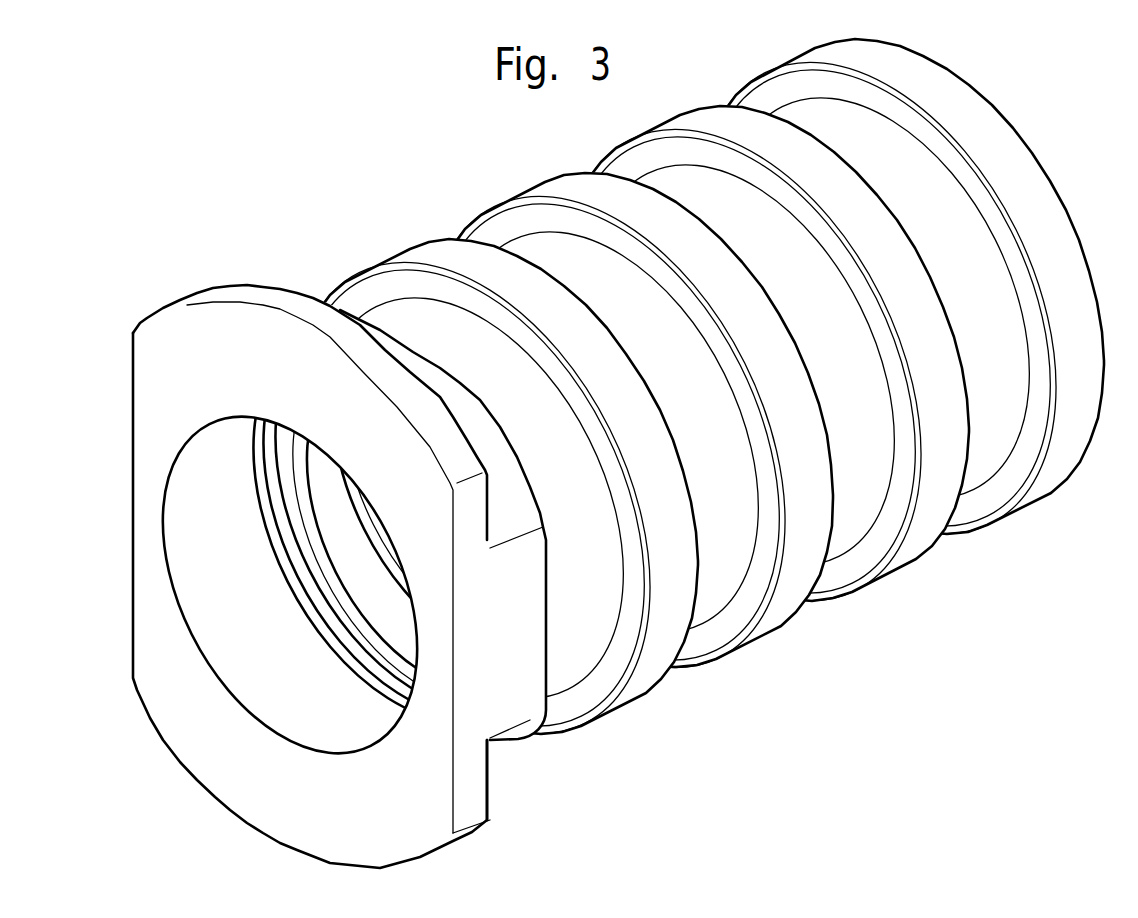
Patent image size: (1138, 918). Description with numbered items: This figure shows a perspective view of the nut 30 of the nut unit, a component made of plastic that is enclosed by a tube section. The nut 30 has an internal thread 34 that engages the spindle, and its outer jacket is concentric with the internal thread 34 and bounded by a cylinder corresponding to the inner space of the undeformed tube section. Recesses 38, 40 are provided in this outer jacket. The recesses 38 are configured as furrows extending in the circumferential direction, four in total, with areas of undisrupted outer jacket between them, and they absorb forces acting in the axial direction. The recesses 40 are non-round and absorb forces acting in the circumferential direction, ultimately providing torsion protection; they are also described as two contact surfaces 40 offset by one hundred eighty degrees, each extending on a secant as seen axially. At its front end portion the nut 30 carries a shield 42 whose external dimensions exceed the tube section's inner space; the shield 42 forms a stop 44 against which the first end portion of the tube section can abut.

The nut 30 is at (885, 692).
The internal thread 34 is at (368, 583).
The recesses 38 is at (858, 525).
The recesses 40 is at (513, 661).
The shield 42 is at (237, 292).
The stop 44 is at (492, 788).